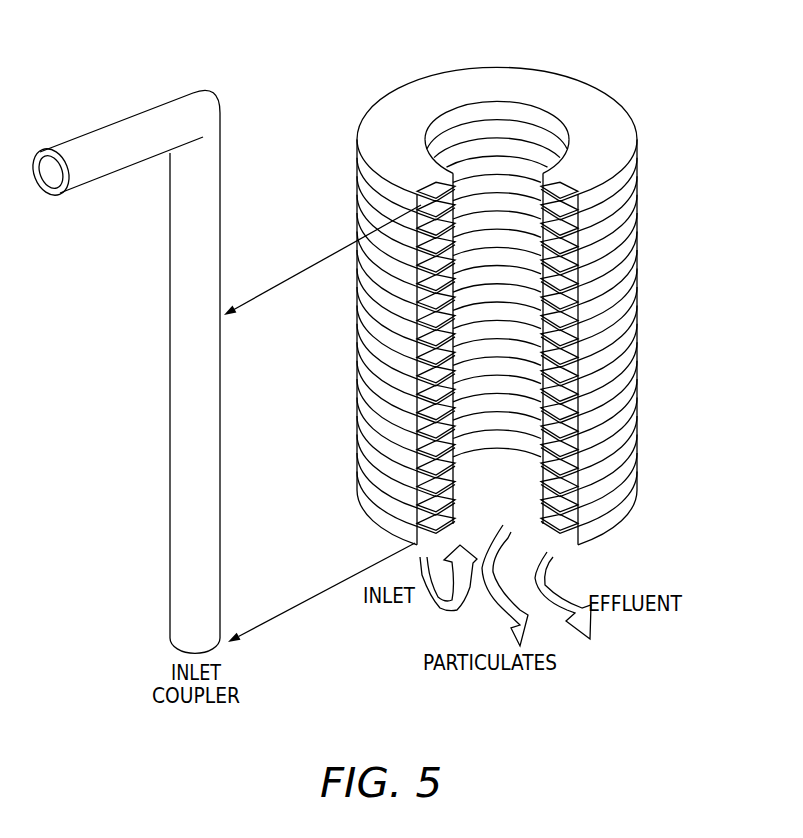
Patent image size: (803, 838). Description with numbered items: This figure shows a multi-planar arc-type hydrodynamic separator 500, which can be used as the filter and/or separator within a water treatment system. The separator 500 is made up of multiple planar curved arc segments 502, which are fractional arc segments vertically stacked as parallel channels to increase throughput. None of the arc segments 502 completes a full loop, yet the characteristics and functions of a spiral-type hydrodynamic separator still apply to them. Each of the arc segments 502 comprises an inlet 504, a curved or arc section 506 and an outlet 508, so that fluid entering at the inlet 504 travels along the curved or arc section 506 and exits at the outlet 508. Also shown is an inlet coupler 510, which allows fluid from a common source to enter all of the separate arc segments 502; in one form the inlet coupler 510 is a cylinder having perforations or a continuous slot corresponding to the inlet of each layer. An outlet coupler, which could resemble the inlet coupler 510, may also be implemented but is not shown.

The multi-planar arc-type hydrodynamic separator 500 is at (334, 46).
The planar curved arc segments 502 is at (631, 210).
The inlet 504 is at (440, 192).
The curved or arc section 506 is at (380, 118).
The outlet 508 is at (553, 192).
The inlet coupler 510 is at (186, 389).